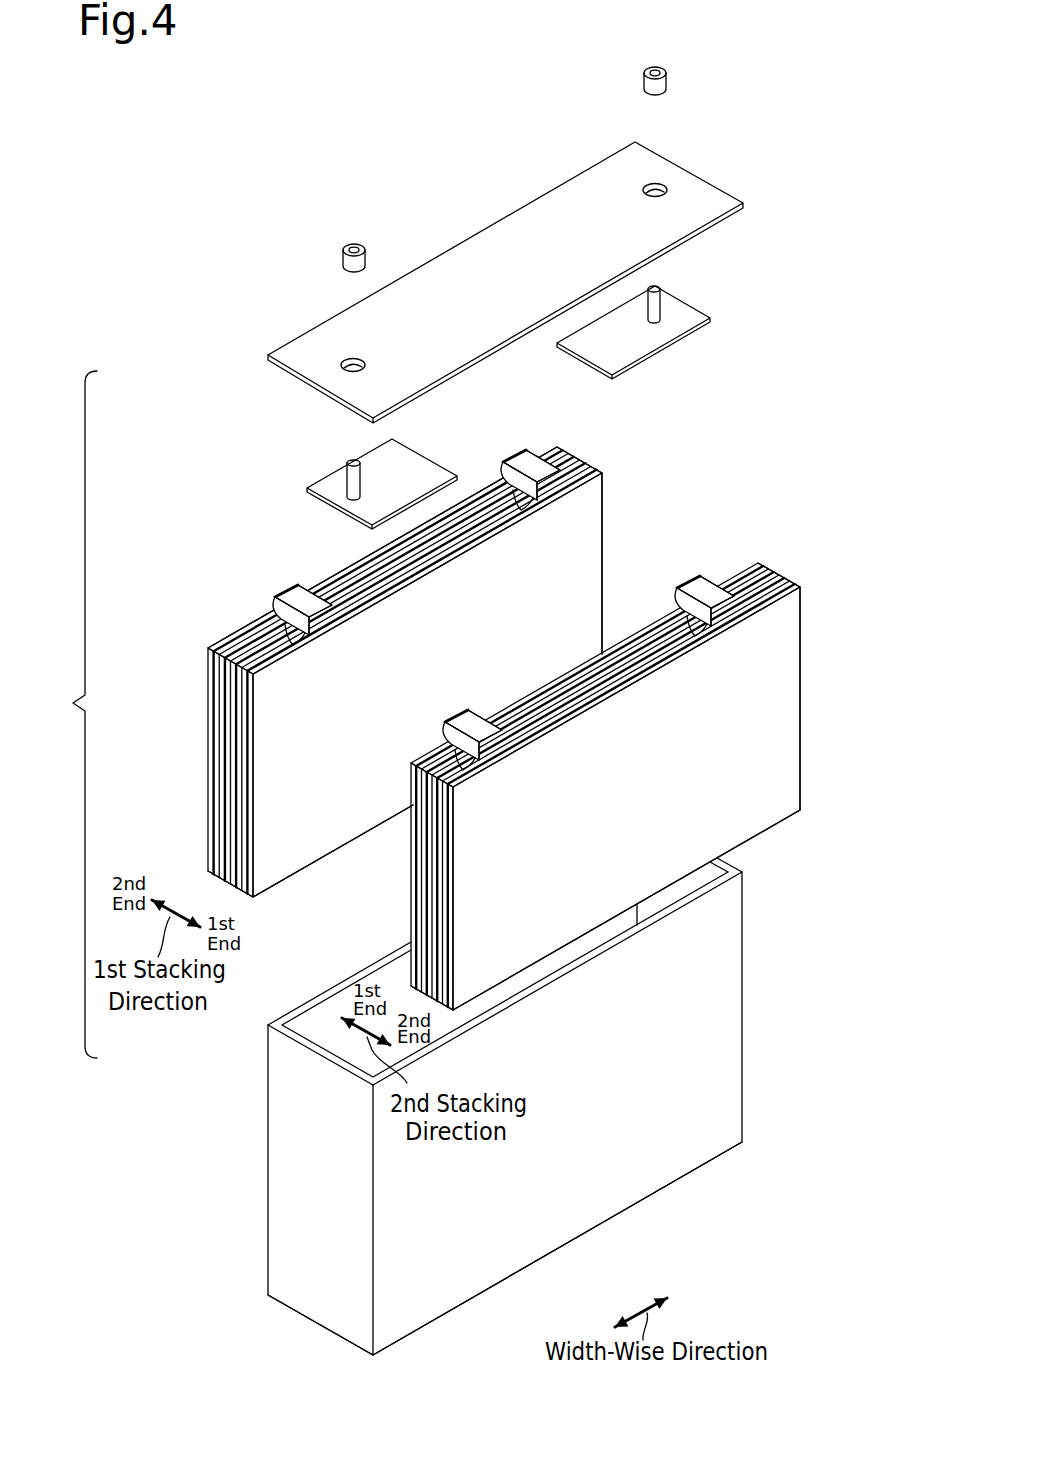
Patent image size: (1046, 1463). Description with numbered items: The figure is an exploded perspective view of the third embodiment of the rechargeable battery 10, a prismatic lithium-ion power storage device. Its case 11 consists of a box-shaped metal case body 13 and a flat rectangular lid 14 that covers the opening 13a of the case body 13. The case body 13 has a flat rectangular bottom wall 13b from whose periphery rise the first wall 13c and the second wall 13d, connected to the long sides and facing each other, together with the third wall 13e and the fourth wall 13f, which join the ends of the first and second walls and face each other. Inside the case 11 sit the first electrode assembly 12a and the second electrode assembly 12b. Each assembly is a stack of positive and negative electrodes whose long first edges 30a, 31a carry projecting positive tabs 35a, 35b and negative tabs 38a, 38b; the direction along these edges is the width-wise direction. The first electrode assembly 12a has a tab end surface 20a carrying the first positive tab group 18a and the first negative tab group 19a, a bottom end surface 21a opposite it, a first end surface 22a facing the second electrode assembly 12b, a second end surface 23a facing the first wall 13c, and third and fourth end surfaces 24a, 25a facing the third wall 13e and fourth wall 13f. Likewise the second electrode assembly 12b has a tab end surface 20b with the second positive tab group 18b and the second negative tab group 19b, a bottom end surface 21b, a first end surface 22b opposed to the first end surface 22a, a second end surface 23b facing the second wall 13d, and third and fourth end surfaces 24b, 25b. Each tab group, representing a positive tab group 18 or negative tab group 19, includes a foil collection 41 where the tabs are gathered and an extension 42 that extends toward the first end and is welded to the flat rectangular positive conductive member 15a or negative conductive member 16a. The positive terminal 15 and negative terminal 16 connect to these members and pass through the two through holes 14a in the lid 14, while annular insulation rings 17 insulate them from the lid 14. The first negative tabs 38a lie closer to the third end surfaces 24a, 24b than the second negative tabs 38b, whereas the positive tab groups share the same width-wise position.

The rechargeable battery 10 is at (155, 207).
The case 11 is at (71, 714).
The first electrode assembly 12a is at (611, 789).
The second electrode assembly 12b is at (409, 673).
The case body 13 is at (460, 1117).
The opening 13a is at (323, 1013).
The bottom wall 13b is at (435, 1319).
The first wall 13c is at (590, 1206).
The second wall 13d is at (283, 1018).
The third wall 13e is at (285, 1242).
The fourth wall 13f is at (727, 862).
The lid 14 is at (427, 282).
The through hole 14a is at (360, 366).
The positive terminal 15 is at (638, 340).
The positive conductive member 15a is at (585, 345).
The negative terminal 16 is at (382, 473).
The negative conductive member 16a is at (410, 460).
The insulation ring 17 is at (343, 258).
The positive tab group 18 is at (645, 593).
The first positive tab group 18a is at (732, 637).
The second positive tab group 18b is at (613, 523).
The negative tab group 19 is at (437, 730).
The first negative tab group 19a is at (522, 793).
The second negative tab group 19b is at (345, 660).
The tab end surface 20a is at (572, 690).
The tab end surface 20b is at (405, 560).
The bottom end surface 21a is at (552, 960).
The bottom end surface 21b is at (311, 868).
The first end surface 22a is at (420, 882).
The first end surface 22b is at (263, 810).
The second end surface 23a is at (803, 750).
The second end surface 23b is at (207, 715).
The third end surface 24a is at (430, 913).
The third end surface 24b is at (223, 767).
The fourth end surface 25a is at (802, 658).
The fourth end surface 25b is at (604, 486).
The first edge 30a is at (352, 590).
The first edge 31a is at (222, 650).
The first positive tab 35a is at (708, 632).
The second positive tab 35b is at (540, 500).
The first negative tab 38a is at (500, 760).
The second negative tab 38b is at (328, 628).
The foil collection 41 is at (280, 598).
The extension 42 is at (300, 588).